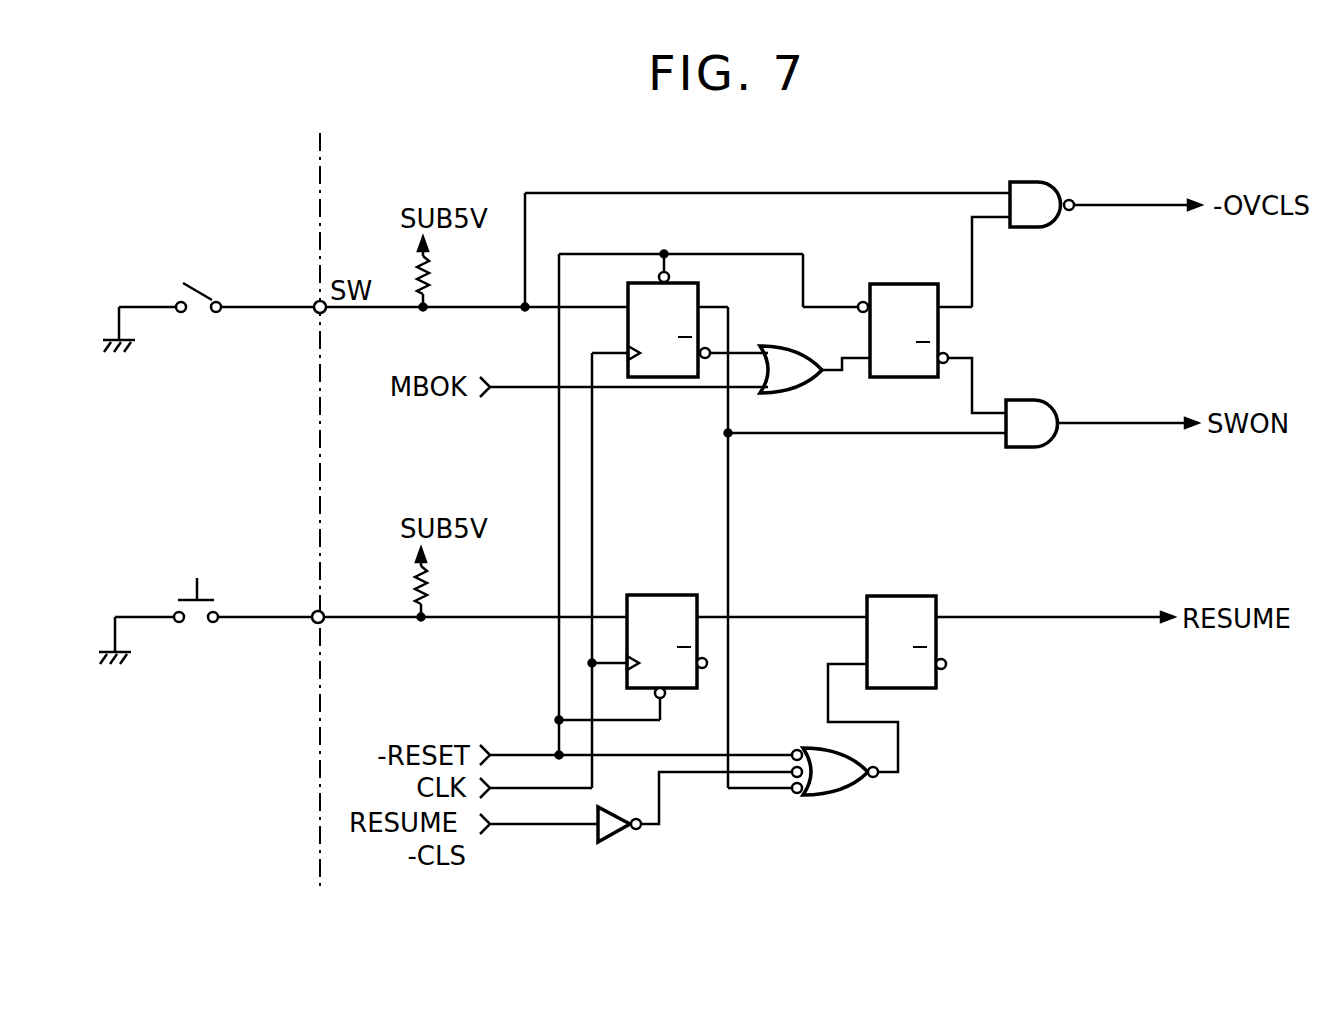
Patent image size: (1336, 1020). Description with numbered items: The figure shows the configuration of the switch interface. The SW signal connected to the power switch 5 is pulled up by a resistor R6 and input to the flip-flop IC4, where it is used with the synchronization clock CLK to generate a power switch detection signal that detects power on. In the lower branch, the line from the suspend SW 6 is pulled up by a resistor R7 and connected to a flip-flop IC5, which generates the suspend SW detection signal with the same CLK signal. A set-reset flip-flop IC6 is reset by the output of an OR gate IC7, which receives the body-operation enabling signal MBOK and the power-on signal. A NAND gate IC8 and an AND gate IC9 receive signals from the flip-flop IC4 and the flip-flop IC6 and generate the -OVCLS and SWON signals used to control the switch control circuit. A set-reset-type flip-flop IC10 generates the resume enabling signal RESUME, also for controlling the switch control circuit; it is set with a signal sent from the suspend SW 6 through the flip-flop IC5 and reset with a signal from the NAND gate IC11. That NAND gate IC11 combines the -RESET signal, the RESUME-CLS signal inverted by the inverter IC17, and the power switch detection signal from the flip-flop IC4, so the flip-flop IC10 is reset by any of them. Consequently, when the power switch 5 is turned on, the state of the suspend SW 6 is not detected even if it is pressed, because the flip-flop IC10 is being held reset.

The power switch 5 is at (205, 283).
The suspend SW 6 is at (205, 578).
The resistor R6 is at (428, 272).
The resistor R7 is at (426, 583).
The flip-flop IC4 is at (700, 283).
The flip-flop IC5 is at (670, 595).
The set-reset flip-flop IC6 is at (908, 284).
The OR gate IC7 is at (778, 345).
The NAND gate IC8 is at (1050, 182).
The AND gate IC9 is at (1048, 400).
The set-reset-type flip-flop IC10 is at (930, 596).
The NAND gate IC11 is at (848, 795).
The inverter IC17 is at (620, 840).